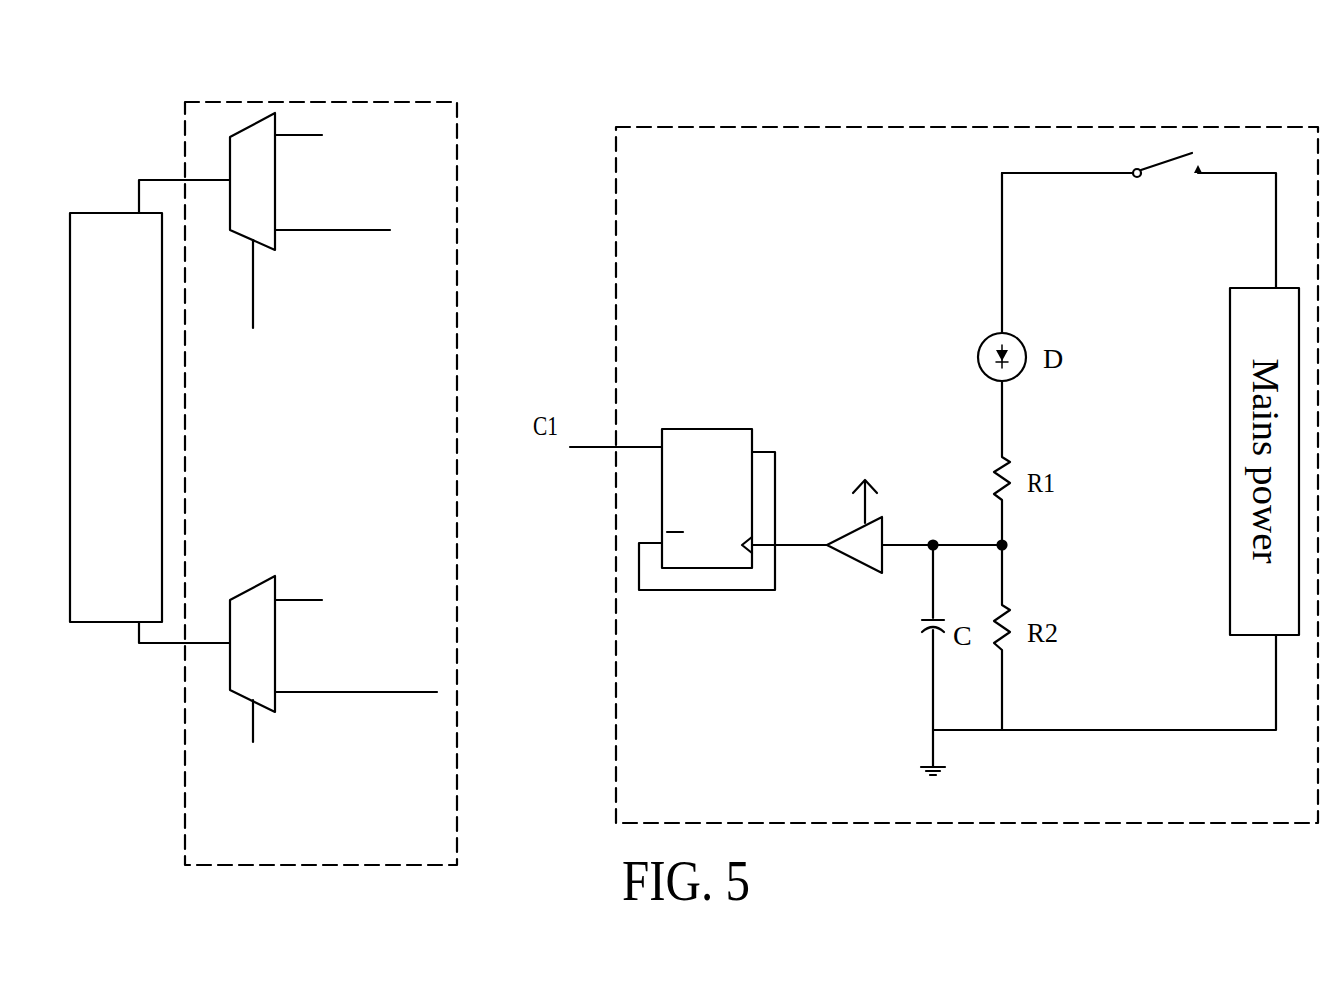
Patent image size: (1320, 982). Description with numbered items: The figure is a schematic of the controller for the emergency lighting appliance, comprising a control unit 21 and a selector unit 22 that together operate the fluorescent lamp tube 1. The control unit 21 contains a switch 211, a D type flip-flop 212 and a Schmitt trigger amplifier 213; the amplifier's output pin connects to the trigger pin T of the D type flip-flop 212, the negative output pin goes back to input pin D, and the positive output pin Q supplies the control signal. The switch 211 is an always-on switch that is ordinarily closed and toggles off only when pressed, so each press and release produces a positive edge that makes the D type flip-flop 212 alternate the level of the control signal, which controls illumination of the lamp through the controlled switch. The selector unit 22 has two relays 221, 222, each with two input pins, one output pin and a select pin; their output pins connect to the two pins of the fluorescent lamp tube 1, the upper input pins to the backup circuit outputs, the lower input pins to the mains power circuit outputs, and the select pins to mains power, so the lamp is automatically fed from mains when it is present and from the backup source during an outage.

The fluorescent lamp tube 1 is at (110, 640).
The control unit 21 is at (729, 124).
The selector unit 22 is at (470, 138).
The switch 211 is at (1137, 182).
The D type flip-flop 212 is at (706, 443).
The Schmitt trigger amplifier 213 is at (866, 560).
The relay 221 is at (237, 218).
The relay 222 is at (244, 609).